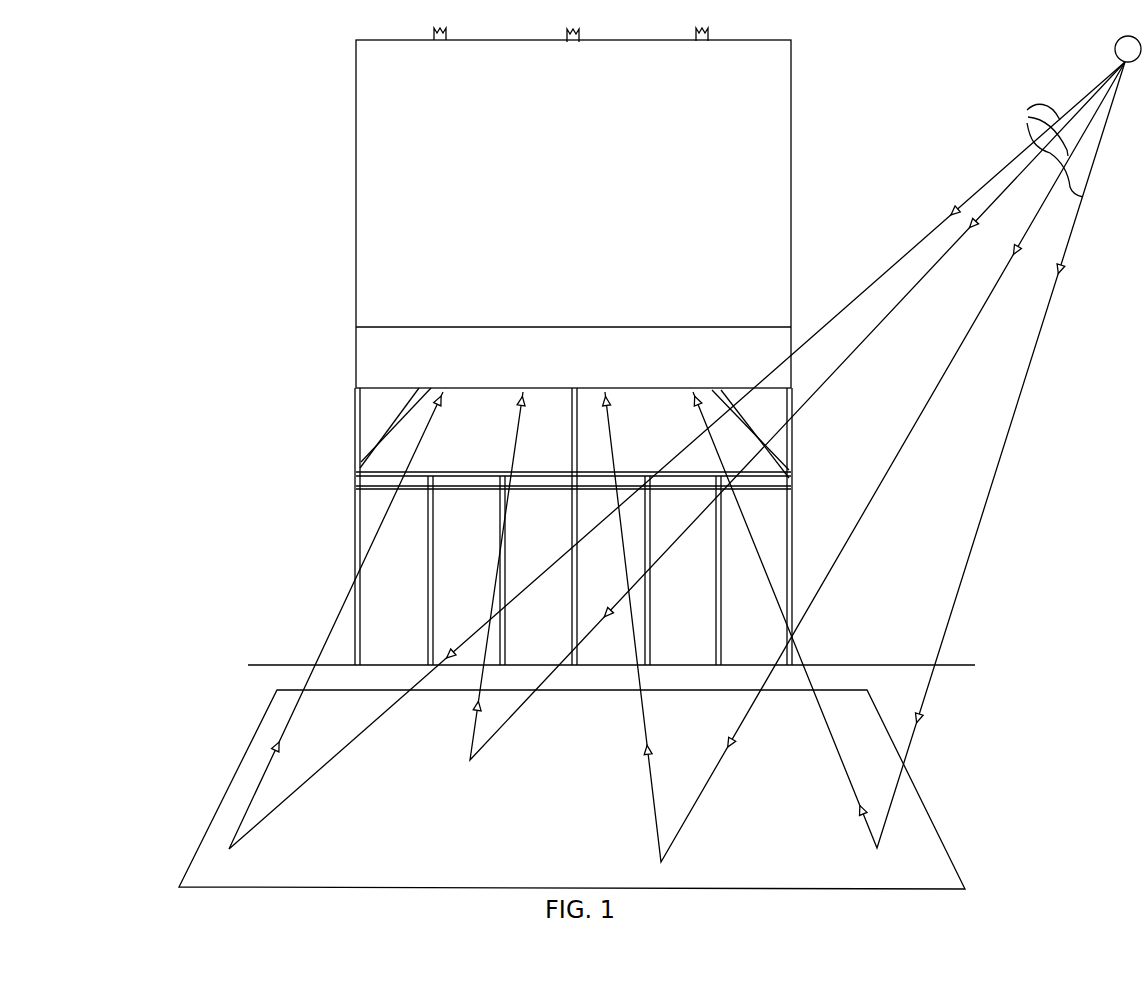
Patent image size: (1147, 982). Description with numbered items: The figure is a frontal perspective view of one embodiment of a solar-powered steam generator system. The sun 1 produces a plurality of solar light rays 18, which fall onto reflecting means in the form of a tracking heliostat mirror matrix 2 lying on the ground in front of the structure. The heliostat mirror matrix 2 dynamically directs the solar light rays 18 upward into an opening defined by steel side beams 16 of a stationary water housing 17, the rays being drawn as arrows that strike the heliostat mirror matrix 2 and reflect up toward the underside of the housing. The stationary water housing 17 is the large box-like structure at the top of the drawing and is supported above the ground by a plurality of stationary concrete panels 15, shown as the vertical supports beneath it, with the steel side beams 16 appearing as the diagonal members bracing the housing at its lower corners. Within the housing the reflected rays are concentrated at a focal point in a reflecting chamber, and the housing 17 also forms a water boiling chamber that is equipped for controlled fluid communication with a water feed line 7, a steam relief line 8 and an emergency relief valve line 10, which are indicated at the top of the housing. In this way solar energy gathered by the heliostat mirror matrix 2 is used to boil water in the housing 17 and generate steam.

The sun 1 is at (1112, 50).
The tracking heliostat mirror matrix 2 is at (948, 870).
The water feed line 7 is at (705, 38).
The steam relief line 8 is at (568, 42).
The emergency relief valve line 10 is at (434, 40).
The stationary concrete panels 15 is at (374, 404).
The steel side beams 16 is at (378, 438).
The stationary water housing 17 is at (793, 192).
The solar light rays 18 is at (677, 462).